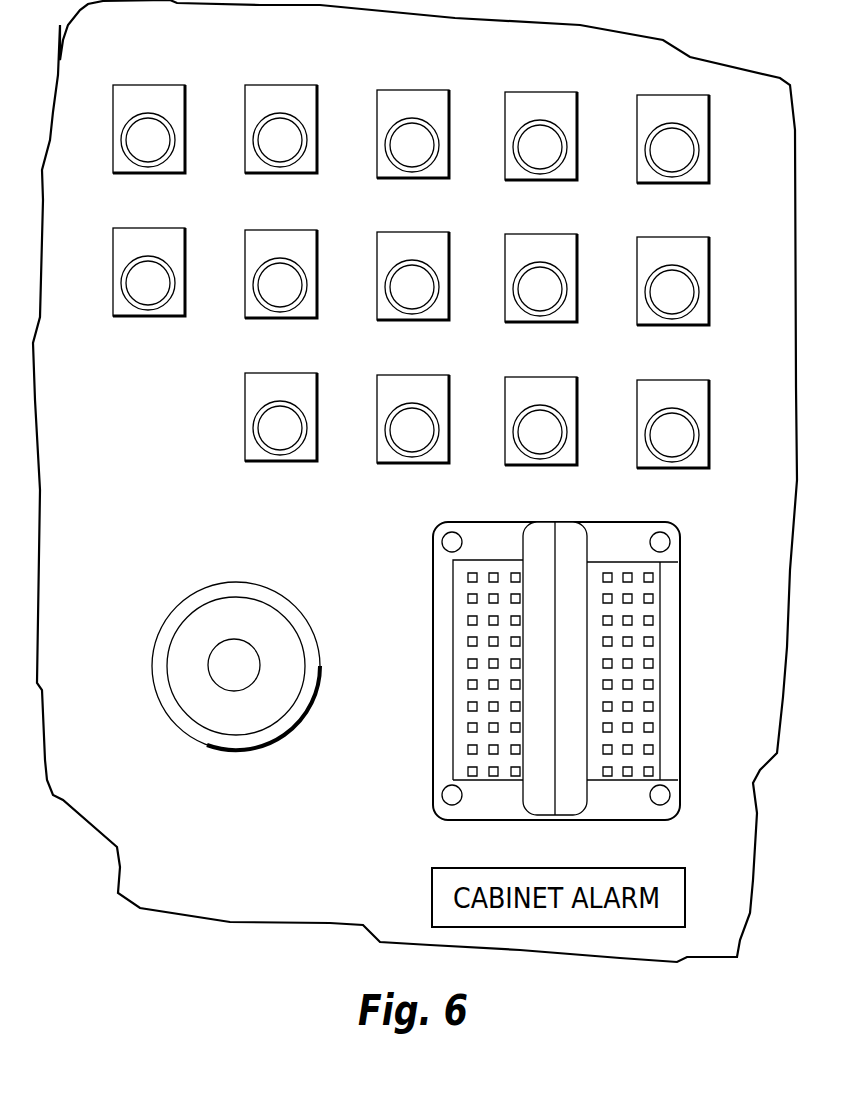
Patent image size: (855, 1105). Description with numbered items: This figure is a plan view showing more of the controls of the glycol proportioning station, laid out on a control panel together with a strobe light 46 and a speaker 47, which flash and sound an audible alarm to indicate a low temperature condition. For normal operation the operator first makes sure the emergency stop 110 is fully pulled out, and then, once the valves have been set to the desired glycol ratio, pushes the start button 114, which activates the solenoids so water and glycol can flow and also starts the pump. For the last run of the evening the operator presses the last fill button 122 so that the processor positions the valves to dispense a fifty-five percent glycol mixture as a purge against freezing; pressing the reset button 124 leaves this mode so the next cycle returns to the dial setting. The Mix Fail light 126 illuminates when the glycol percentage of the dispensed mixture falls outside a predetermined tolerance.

The emergency stop 110 is at (178, 623).
The start button 114 is at (268, 125).
The last fill button 122 is at (123, 157).
The reset button 124 is at (254, 431).
The Mix Fail light 126 is at (663, 127).
The strobe light 46 is at (568, 780).
The speaker 47 is at (632, 658).